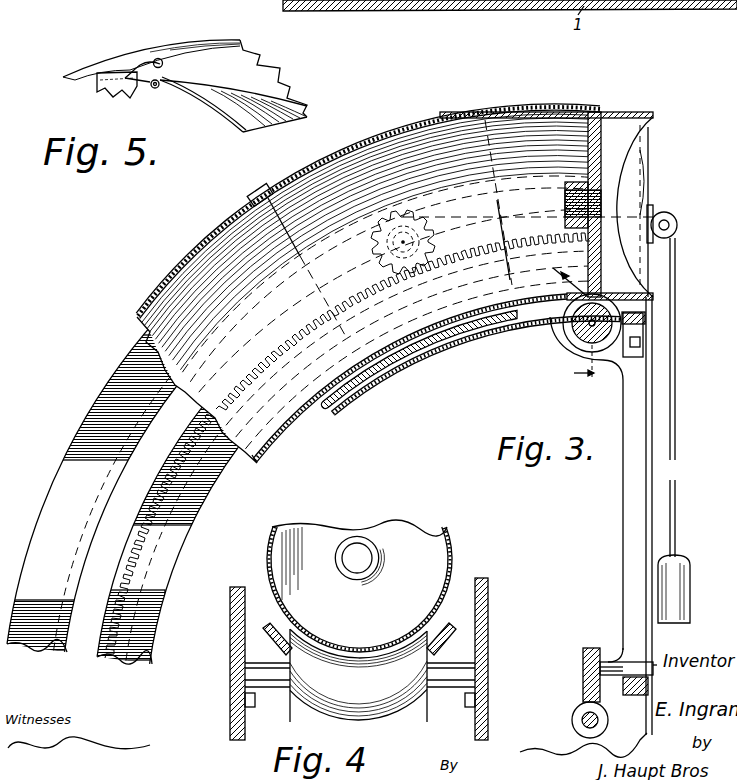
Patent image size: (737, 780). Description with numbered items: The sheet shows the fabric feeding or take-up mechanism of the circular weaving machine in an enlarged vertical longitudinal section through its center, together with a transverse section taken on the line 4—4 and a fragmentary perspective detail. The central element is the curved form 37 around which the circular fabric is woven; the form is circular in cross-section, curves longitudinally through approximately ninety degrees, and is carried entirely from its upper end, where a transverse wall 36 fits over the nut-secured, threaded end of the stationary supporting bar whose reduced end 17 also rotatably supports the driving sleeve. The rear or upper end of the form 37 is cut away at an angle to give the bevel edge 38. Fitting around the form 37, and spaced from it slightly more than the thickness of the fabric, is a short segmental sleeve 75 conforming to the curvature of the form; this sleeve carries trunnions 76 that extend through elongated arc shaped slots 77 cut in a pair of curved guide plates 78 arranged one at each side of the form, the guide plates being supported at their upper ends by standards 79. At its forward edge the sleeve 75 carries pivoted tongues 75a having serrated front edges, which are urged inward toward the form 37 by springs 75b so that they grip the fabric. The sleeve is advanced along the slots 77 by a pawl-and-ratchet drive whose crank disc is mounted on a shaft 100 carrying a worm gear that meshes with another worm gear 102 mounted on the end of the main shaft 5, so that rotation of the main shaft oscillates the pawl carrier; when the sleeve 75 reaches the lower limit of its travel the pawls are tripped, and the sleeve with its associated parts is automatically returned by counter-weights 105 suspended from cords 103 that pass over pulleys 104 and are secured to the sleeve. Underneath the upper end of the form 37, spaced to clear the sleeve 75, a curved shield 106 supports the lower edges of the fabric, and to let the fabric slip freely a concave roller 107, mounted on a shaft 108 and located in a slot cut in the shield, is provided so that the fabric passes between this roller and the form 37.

In FIG. 3, the form 37 is at (137, 318).
In FIG. 4, the form 37 is at (452, 560).
In FIG. 3, the bevel edge 38 is at (530, 203).
In FIG. 3, the transverse wall 36 is at (565, 190).
In FIG. 4, the transverse wall 36 is at (430, 540).
In FIG. 3, the segmental sleeve 75 is at (405, 128).
In FIG. 5, the segmental sleeve 75 is at (168, 48).
In FIG. 5, the pivoted tongues 75a is at (110, 87).
In FIG. 5, the springs 75b is at (163, 65).
In FIG. 3, the trunnions 76 is at (380, 244).
In FIG. 3, the arc shaped slots 77 is at (118, 485).
In FIG. 3, the curved guide plates 78 is at (52, 492).
In FIG. 3, the standards 79 is at (625, 498).
In FIG. 4, the standards 79 is at (230, 637).
In FIG. 3, the section line 4— 4 is at (566, 328).
In FIG. 3, the main shaft 5 is at (655, 665).
In FIG. 4, the reduced end of bar 17 is at (357, 565).
In FIG. 3, the shaft 100 is at (590, 725).
In FIG. 3, the worm gear 102 is at (585, 647).
In FIG. 3, the cords 103 is at (677, 263).
In FIG. 3, the pulleys 104 is at (676, 220).
In FIG. 3, the counter-weights 105 is at (691, 585).
In FIG. 3, the curved shield 106 is at (473, 340).
In FIG. 4, the curved shield 106 is at (456, 623).
In FIG. 3, the concave roller 107 is at (563, 342).
In FIG. 4, the concave roller 107 is at (407, 707).
In FIG. 4, the shaft 108 is at (447, 683).